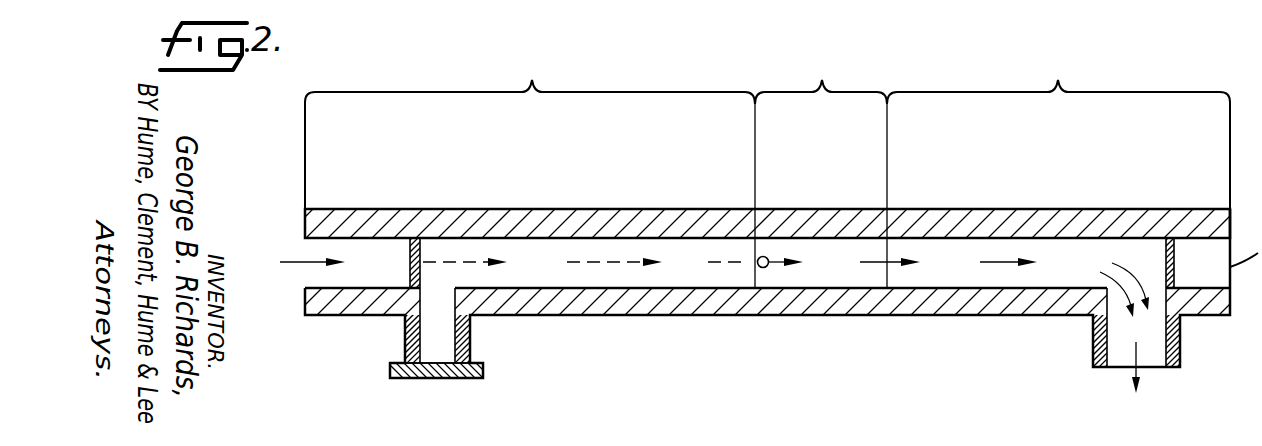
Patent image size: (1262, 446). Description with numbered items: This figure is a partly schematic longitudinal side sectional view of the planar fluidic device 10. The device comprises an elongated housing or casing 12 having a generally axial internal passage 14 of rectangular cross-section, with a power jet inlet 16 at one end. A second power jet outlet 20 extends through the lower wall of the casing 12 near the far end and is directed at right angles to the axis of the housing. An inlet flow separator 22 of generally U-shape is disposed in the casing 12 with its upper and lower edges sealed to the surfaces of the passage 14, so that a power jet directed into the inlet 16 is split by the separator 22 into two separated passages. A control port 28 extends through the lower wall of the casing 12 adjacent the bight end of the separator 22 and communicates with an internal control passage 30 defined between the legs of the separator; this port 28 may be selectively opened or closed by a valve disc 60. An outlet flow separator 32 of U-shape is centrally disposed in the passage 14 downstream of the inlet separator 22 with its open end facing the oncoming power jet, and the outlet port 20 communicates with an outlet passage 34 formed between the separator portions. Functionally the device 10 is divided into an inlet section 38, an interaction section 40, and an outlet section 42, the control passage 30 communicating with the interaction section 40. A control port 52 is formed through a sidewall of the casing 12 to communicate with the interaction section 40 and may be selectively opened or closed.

The fluidic device 10 is at (950, 205).
The housing or casing 12 is at (693, 315).
The internal passage 14 is at (837, 243).
The power jet inlet 16 is at (308, 270).
The second power jet outlet / outlet port 20 is at (1127, 365).
The inlet flow separator 22 is at (688, 242).
The control port 28 is at (433, 325).
The internal control passage 30 is at (632, 268).
The outlet flow separator 32 is at (1176, 250).
The outlet passage 34 is at (965, 273).
The inlet section 38 is at (424, 170).
The interaction section 40 is at (821, 169).
The outlet section 42 is at (1058, 169).
The control port 52 is at (770, 257).
The valve disc 60 is at (437, 378).